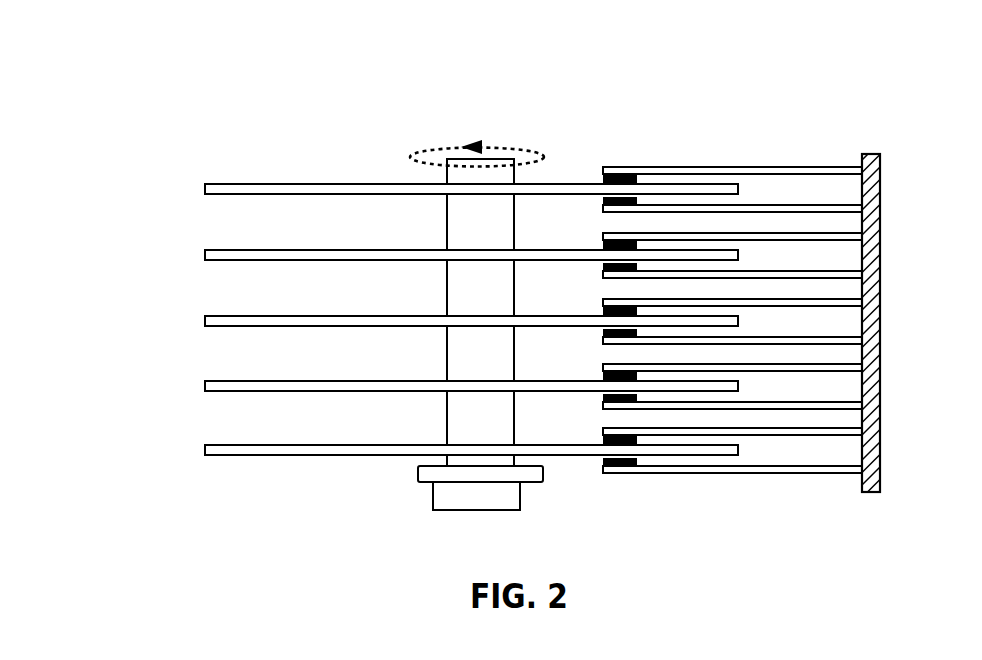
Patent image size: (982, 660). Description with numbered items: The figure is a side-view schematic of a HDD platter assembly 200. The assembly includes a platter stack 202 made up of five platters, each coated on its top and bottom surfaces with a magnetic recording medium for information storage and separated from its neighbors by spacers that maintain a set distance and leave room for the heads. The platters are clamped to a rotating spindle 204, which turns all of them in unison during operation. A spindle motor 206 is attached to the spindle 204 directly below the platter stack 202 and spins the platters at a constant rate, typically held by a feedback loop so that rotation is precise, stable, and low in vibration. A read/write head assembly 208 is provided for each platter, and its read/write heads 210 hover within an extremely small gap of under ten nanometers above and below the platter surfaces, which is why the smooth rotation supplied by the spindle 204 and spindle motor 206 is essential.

The HDD platter assembly 200 is at (705, 44).
The platter stack 202 is at (205, 445).
The spindle 204 is at (455, 160).
The spindle motor 206 is at (522, 495).
The read/write head assembly 208 is at (830, 210).
The read/write heads 210 is at (613, 197).